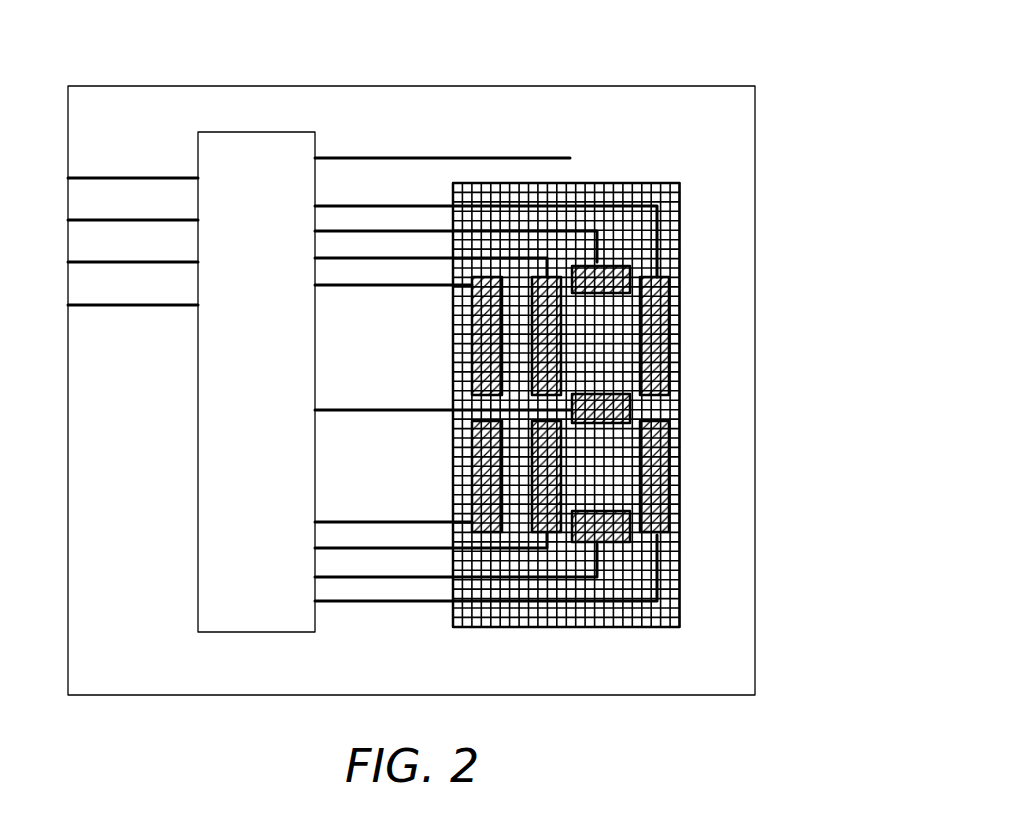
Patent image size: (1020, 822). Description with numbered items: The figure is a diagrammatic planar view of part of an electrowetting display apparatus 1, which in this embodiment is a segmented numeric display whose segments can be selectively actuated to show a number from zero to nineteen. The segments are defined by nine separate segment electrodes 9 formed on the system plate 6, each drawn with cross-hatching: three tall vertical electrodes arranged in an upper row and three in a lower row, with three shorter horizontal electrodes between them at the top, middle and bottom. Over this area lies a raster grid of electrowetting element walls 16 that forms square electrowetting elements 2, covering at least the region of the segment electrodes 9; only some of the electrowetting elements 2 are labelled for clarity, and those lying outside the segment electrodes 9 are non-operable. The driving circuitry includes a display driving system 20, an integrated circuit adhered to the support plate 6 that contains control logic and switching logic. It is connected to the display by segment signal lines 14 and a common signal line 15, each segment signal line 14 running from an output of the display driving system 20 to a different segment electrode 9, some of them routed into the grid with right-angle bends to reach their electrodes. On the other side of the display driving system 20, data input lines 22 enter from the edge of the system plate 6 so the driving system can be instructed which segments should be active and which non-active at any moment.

The electrowetting display apparatus 1 is at (800, 56).
The electrowetting elements 2 is at (645, 536).
The system plate 6 is at (408, 104).
The segment electrodes 9 is at (470, 331).
The segment signal lines 14 is at (382, 231).
The common signal line 15 is at (500, 157).
The electrowetting element walls 16 is at (596, 383).
The display driving system 20 is at (269, 393).
The data input lines 22 is at (142, 220).